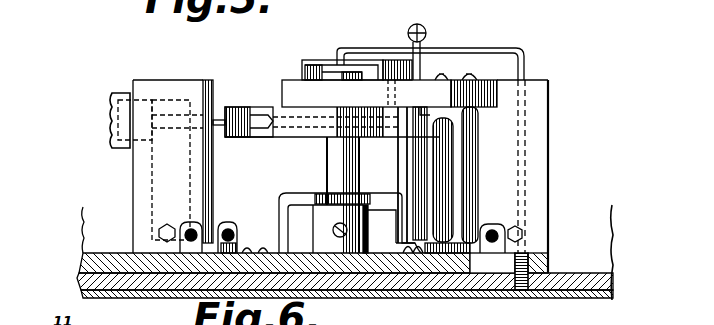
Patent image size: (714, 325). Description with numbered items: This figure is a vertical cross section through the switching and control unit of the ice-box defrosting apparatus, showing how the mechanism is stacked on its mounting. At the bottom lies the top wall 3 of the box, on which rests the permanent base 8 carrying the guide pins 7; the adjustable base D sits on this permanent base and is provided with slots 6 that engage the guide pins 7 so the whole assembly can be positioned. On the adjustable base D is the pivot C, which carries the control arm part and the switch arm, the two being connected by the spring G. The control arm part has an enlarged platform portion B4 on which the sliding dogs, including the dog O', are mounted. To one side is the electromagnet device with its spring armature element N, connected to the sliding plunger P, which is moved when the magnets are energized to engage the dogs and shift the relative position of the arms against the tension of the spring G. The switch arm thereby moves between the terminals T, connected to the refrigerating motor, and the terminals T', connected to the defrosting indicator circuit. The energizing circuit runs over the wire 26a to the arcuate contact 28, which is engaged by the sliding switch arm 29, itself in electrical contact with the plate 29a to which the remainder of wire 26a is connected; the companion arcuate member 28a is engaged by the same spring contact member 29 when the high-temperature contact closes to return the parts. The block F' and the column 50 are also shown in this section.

The spring armature element N is at (110, 112).
The sliding plunger P is at (212, 117).
The pivot C is at (330, 158).
The sliding dog O' is at (252, 143).
The platform portion B4 is at (306, 117).
The armature block F' is at (515, 78).
The plate 29a is at (319, 60).
The spring G is at (427, 32).
The wire 26a is at (511, 50).
The sliding switch arm 29 is at (407, 166).
The rod 50 is at (469, 173).
The terminals T' is at (501, 218).
The terminals T is at (213, 215).
The arcuate contact 28 is at (287, 194).
The arcuate member 28a is at (396, 237).
The adjustable base D is at (103, 255).
The permanent base 8 is at (574, 278).
The top wall 3 is at (570, 300).
The slots 6 is at (488, 264).
The guide pins 7 is at (529, 252).